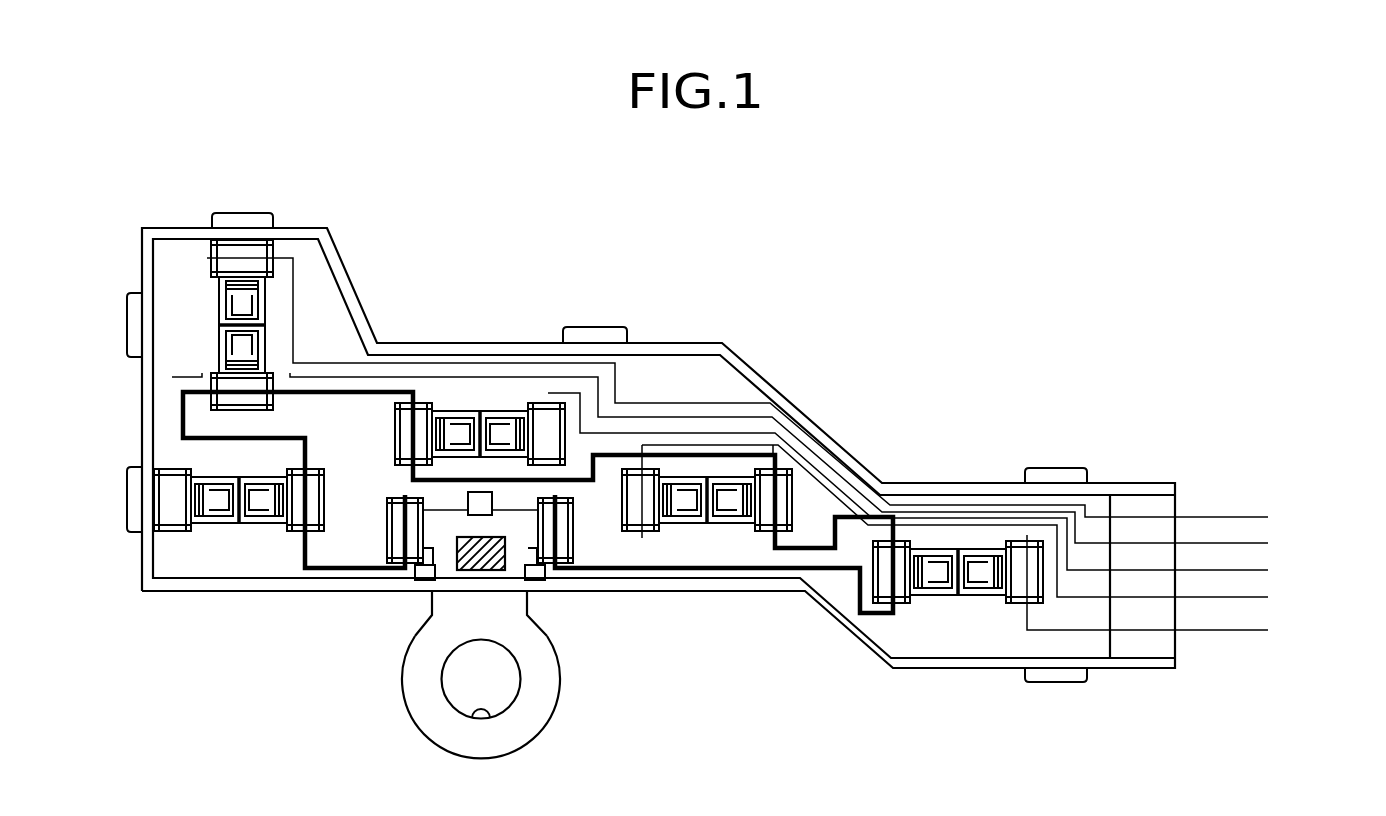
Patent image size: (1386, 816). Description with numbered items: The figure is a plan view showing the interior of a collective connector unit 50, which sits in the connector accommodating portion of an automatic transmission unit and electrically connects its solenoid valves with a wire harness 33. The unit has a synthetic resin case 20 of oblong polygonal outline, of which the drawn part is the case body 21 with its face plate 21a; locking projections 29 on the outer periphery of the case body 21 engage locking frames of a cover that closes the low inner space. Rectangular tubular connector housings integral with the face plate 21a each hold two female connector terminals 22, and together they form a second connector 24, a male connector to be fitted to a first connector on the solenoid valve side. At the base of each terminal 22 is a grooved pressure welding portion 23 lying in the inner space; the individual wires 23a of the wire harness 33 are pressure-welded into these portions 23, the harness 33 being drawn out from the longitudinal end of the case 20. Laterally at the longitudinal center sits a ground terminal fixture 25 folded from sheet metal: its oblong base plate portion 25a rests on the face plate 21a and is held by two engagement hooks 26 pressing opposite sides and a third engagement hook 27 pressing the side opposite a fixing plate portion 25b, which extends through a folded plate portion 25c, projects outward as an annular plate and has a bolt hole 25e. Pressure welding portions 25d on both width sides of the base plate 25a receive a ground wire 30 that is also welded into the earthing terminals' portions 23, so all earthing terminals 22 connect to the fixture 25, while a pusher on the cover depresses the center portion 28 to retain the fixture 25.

The collective connector unit 50 is at (808, 318).
The case 20 is at (832, 432).
The case body 21 is at (707, 343).
The face plate 21a is at (650, 372).
The female connector terminal 22 is at (215, 340).
The pressure welding portion 23 is at (208, 267).
The wire 23a is at (1220, 543).
The second connector 24 is at (298, 322).
The ground terminal fixture 25 is at (450, 589).
The base plate portion 25a is at (527, 614).
The fixing plate portion 25b is at (453, 738).
The folded plate portion 25c is at (432, 594).
The pressure welding portion for earthing 25d is at (403, 497).
The bolt hole 25e is at (481, 702).
The engagement hook 26 is at (417, 573).
The engagement hook 27 is at (492, 503).
The center portion 28 is at (457, 542).
The locking projection 29 is at (246, 211).
The ground wire 30 is at (833, 577).
The wire harness 33 is at (1282, 521).